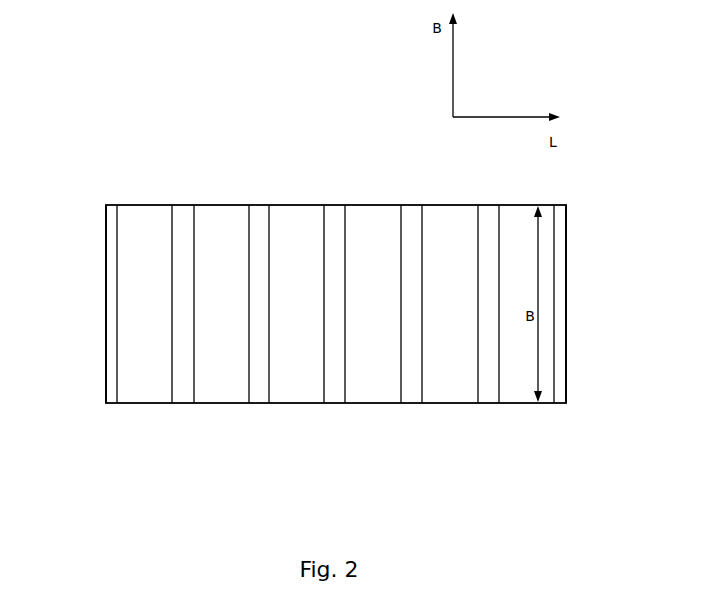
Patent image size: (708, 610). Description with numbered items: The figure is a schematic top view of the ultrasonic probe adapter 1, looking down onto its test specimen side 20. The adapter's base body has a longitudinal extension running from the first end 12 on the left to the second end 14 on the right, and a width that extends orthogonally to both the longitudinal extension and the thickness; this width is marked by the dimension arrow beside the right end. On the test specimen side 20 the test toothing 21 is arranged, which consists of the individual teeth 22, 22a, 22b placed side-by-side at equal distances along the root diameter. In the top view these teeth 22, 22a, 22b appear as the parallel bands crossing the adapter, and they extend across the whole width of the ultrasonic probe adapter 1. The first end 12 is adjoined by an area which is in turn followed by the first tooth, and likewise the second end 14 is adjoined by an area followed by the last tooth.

The ultrasonic probe adapter 1 is at (82, 175).
The first end 12 is at (106, 362).
The second end 14 is at (566, 281).
The test specimen side 20 is at (411, 238).
The test toothing 21 is at (297, 228).
The teeth 22 is at (447, 368).
The tooth 22a is at (143, 220).
The tooth 22b is at (513, 385).